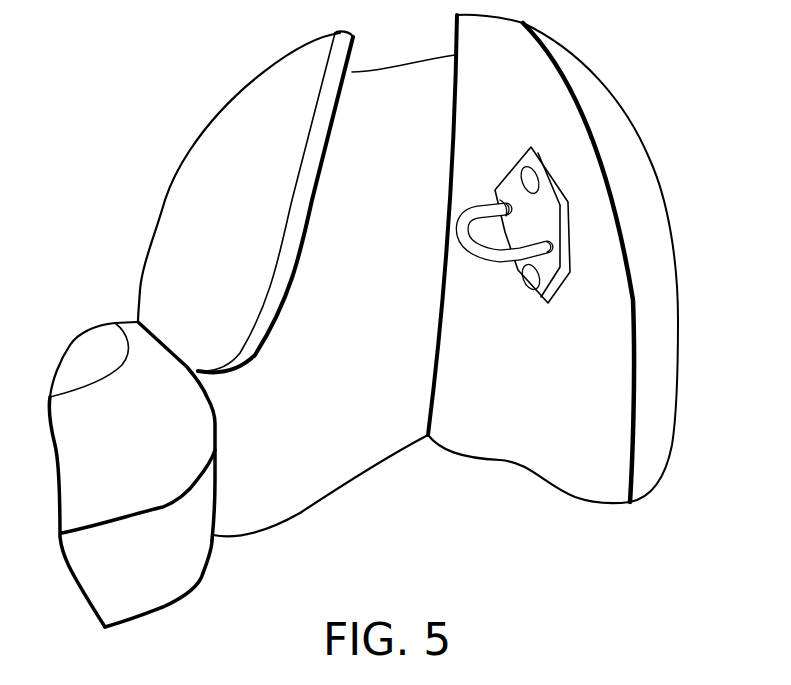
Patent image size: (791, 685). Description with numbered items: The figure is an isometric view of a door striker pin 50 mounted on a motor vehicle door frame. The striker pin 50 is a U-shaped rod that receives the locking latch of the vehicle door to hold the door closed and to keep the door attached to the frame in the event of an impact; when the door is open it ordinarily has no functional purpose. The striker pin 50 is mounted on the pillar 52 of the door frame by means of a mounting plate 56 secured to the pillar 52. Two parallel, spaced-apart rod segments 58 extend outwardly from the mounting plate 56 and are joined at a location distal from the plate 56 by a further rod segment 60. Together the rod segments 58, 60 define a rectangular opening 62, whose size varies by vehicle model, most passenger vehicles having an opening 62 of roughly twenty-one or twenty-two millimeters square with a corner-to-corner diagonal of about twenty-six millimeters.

The striker pin 50 is at (552, 211).
The pillar 52 is at (520, 87).
The mounting plate 56 is at (556, 207).
The rod segments 58 is at (558, 275).
The rod segment 60 is at (488, 247).
The rectangular opening 62 is at (481, 199).